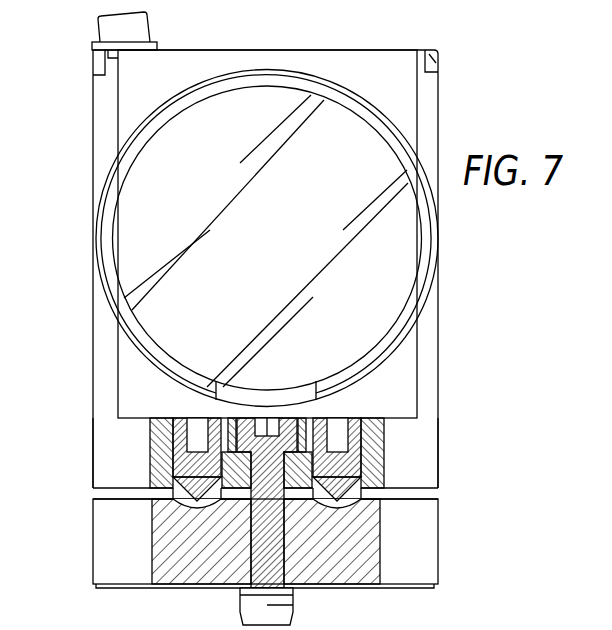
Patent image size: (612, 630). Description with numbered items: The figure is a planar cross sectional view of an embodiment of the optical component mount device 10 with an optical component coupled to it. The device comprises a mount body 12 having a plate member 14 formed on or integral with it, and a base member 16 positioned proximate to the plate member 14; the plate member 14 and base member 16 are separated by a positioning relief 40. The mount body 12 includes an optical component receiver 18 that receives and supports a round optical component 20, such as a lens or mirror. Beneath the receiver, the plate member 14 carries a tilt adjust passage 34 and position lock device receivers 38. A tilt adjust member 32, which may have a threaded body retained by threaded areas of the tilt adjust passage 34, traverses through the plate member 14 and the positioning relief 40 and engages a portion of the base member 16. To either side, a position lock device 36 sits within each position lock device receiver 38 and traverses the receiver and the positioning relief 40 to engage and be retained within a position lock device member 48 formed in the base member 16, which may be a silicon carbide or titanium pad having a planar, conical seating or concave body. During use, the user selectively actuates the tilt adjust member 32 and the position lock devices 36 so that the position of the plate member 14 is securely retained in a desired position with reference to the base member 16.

The optical component mount device 10 is at (470, 92).
The mount body 12 is at (130, 386).
The plate member 14 is at (110, 442).
The base member 16 is at (137, 540).
The optical component receiver 18 is at (130, 98).
The optical component 20 is at (153, 227).
The tilt adjust member 32 is at (267, 505).
The tilt adjust passage 34 is at (290, 481).
The position lock device 36 is at (340, 467).
The position lock device receiver 38 is at (368, 438).
The positioning relief 40 is at (97, 492).
The position lock device member 48 is at (193, 507).